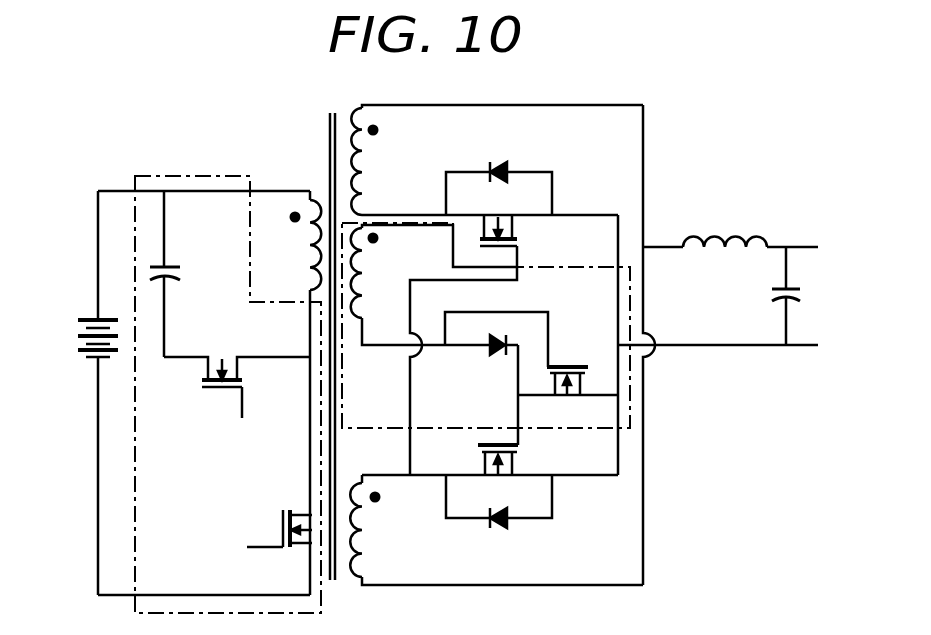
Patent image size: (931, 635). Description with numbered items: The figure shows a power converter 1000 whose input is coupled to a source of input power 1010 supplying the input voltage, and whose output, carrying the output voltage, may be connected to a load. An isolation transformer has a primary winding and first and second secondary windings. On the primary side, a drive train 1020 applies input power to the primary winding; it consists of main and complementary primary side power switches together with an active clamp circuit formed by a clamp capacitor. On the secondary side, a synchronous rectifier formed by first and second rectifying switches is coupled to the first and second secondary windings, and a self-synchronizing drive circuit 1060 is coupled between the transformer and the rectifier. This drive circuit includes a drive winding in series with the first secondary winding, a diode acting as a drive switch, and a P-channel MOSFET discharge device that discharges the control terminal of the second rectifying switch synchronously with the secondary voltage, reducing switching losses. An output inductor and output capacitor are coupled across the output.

The power converter 1000 is at (253, 125).
The source of input power 1010 is at (97, 358).
The drive train 1020 is at (170, 176).
The self-synchronizing drive circuit 1060 is at (631, 413).